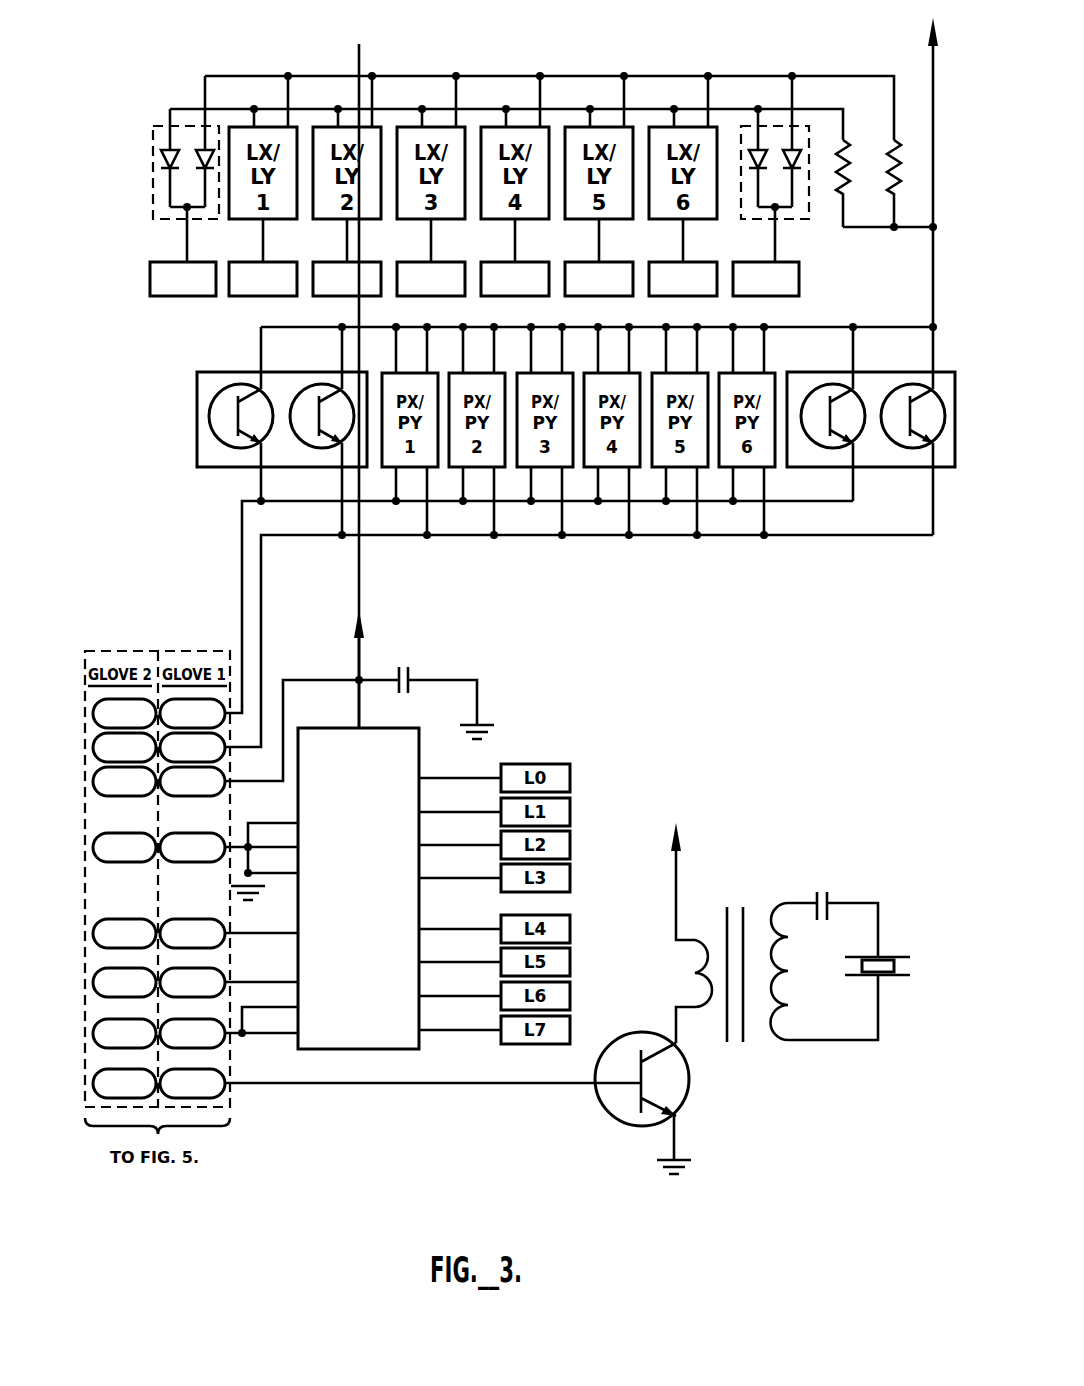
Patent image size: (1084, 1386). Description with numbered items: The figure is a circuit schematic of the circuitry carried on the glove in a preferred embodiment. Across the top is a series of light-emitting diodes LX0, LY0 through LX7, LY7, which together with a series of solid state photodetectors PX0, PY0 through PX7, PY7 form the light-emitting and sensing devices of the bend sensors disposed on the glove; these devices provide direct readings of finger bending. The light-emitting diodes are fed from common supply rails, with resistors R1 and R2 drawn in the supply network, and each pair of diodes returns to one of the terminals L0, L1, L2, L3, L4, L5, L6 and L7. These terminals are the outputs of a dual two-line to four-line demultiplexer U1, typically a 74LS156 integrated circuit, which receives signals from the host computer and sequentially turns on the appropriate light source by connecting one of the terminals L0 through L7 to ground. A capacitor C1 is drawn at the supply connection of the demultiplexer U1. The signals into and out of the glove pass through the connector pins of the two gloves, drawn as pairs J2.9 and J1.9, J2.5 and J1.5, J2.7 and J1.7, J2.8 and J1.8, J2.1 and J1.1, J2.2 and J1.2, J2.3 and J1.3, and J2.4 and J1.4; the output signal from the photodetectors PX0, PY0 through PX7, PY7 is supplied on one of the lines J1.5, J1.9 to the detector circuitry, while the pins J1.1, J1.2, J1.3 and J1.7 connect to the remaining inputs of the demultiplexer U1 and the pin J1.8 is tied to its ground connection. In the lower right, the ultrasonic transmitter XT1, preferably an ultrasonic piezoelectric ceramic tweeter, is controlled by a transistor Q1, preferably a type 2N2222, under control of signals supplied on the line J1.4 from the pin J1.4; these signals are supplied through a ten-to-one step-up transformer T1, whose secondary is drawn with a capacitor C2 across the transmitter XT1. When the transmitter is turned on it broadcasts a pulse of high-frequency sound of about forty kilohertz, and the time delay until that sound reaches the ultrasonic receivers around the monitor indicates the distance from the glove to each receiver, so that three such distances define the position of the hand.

The light-emitting diode LX0 is at (159, 178).
The light-emitting diode LY0 is at (206, 161).
The light-emitting diode LX7 is at (748, 178).
The light-emitting diode LY7 is at (795, 161).
The terminal L0 is at (183, 279).
The terminal L1 is at (263, 279).
The terminal L2 is at (347, 279).
The terminal L3 is at (431, 279).
The terminal L4 is at (515, 279).
The terminal L5 is at (599, 279).
The terminal L6 is at (683, 279).
The terminal L7 is at (766, 279).
The resistor R1 is at (857, 183).
The resistor R2 is at (907, 183).
The solid state photodetector PX0 is at (235, 399).
The solid state photodetector PY0 is at (322, 399).
The solid state photodetector PX7 is at (829, 399).
The solid state photodetector PY7 is at (913, 399).
The glove 2 connector pin 9 J2.9 is at (124, 713).
The line J1.9 is at (192, 713).
The glove 2 connector pin 5 J2.5 is at (124, 747).
The line J1.5 is at (192, 747).
The glove 2 connector pin 7 J2.7 is at (124, 781).
The glove 1 connector pin 7 J1.7 is at (192, 781).
The glove 2 connector pin 8 J2.8 is at (124, 847).
The glove 1 connector pin 8 J1.8 is at (192, 847).
The glove 2 connector pin 1 J2.1 is at (124, 933).
The glove 1 connector pin 1 J1.1 is at (192, 933).
The glove 2 connector pin 2 J2.2 is at (124, 982).
The glove 1 connector pin 2 J1.2 is at (192, 982).
The glove 2 connector pin 3 J2.3 is at (124, 1033).
The glove 1 connector pin 3 J1.3 is at (192, 1033).
The glove 2 connector pin 4 J2.4 is at (124, 1083).
The line J1.4 is at (192, 1083).
The dual 2-line to 4-line demultiplexer U1 is at (358, 888).
The capacitor C1 is at (404, 669).
The capacitor C2 is at (823, 891).
The step-up transformer T1 is at (732, 946).
The transistor Q1 is at (657, 1079).
The ultrasonic transmitter XT1 is at (898, 969).